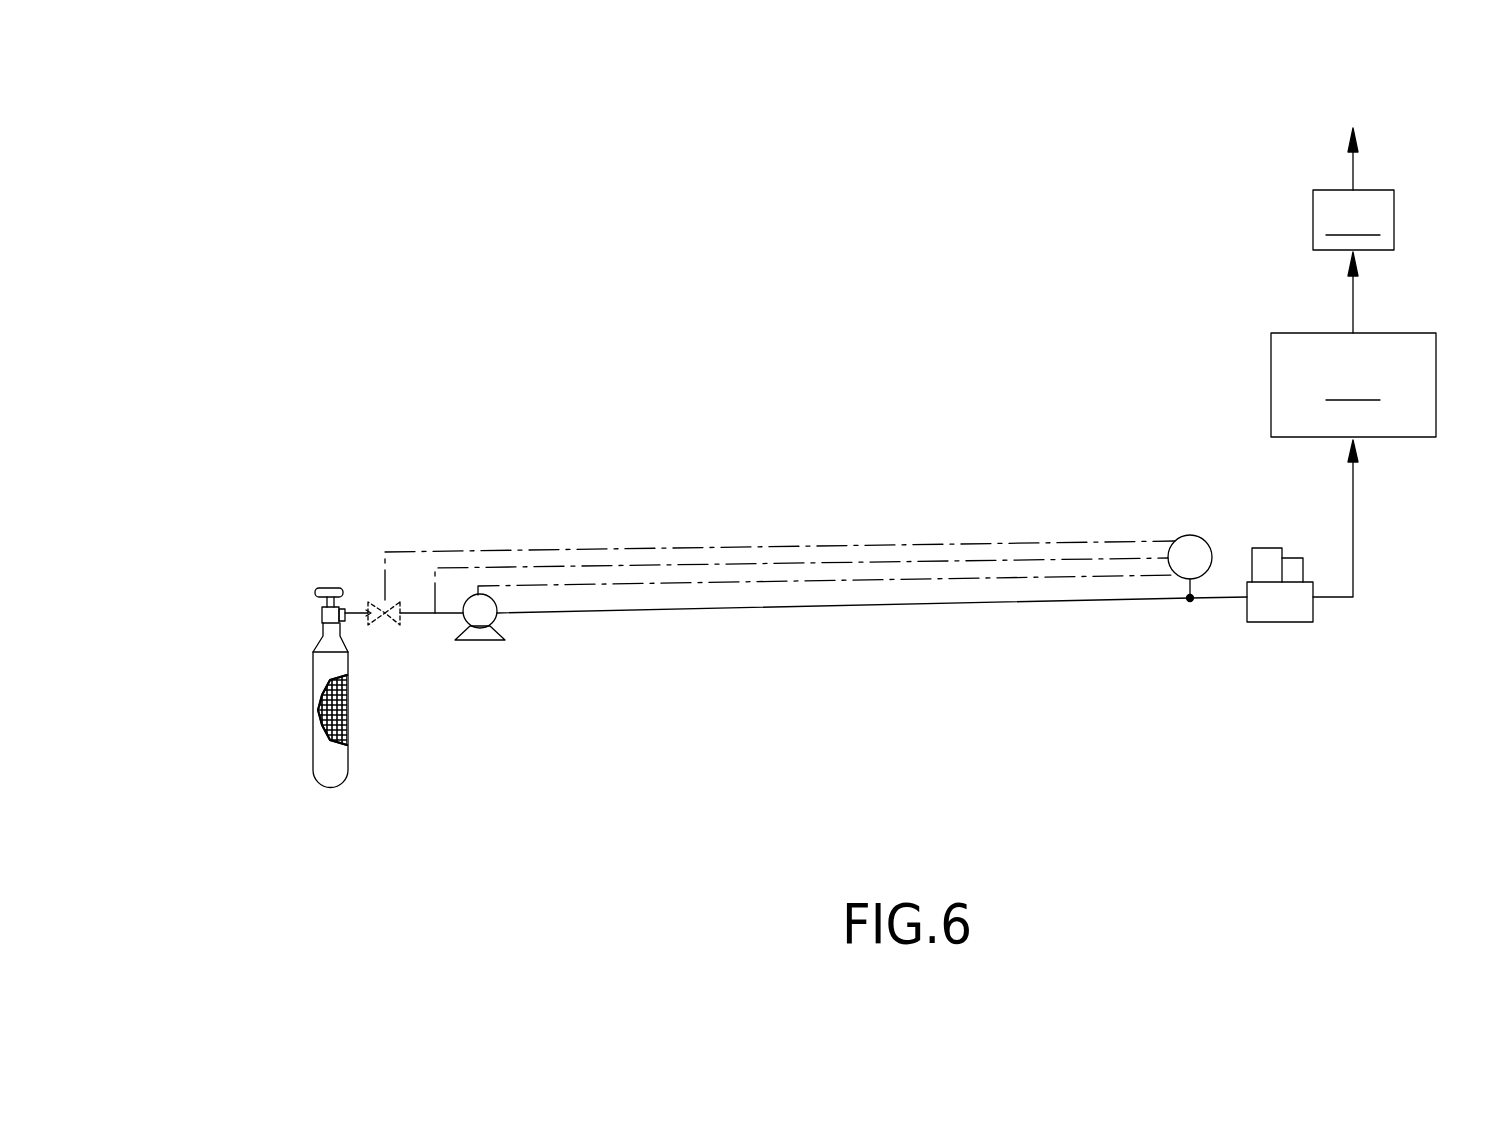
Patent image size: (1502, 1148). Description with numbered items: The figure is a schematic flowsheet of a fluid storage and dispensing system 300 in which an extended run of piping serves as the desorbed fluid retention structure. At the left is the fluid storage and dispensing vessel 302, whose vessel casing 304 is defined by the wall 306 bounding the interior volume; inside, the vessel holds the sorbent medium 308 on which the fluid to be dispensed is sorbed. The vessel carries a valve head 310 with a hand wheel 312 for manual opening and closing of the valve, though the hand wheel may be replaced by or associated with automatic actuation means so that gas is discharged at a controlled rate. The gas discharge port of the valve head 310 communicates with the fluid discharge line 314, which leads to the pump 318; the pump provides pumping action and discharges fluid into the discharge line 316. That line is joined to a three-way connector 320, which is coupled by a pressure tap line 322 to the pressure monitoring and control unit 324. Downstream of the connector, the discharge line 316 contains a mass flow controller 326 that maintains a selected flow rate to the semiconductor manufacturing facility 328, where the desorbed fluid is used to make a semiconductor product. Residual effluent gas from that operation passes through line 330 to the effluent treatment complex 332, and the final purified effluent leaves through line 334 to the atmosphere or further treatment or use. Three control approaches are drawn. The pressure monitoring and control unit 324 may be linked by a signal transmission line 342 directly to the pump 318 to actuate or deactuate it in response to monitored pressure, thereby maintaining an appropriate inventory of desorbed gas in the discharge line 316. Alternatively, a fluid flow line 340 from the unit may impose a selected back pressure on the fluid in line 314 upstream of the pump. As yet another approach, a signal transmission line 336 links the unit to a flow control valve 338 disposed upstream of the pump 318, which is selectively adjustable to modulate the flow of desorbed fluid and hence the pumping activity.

The fluid storage and dispensing system 300 is at (815, 320).
The fluid storage and dispensing vessel 302 is at (233, 768).
The vessel casing 304 is at (320, 673).
The wall 306 is at (348, 692).
The sorbent medium 308 is at (348, 738).
The valve head 310 is at (322, 612).
The hand wheel 312 is at (330, 587).
The fluid discharge line 314 is at (358, 610).
The discharge line 316 is at (760, 608).
The pump 318 is at (483, 642).
The three-way connector 320 is at (1190, 602).
The pressure tap line 322 is at (1195, 588).
The pressure monitoring and control unit 324 is at (1188, 548).
The mass flow controller 326 is at (1277, 623).
The semiconductor manufacturing facility 328 is at (1353, 385).
The line 330 is at (1354, 300).
The effluent treatment complex 332 is at (1353, 220).
The line 334 is at (1352, 172).
The signal transmission line 336 is at (613, 550).
The flow control valve 338 is at (393, 625).
The fluid flow line 340 is at (710, 567).
The signal transmission line 342 is at (813, 583).